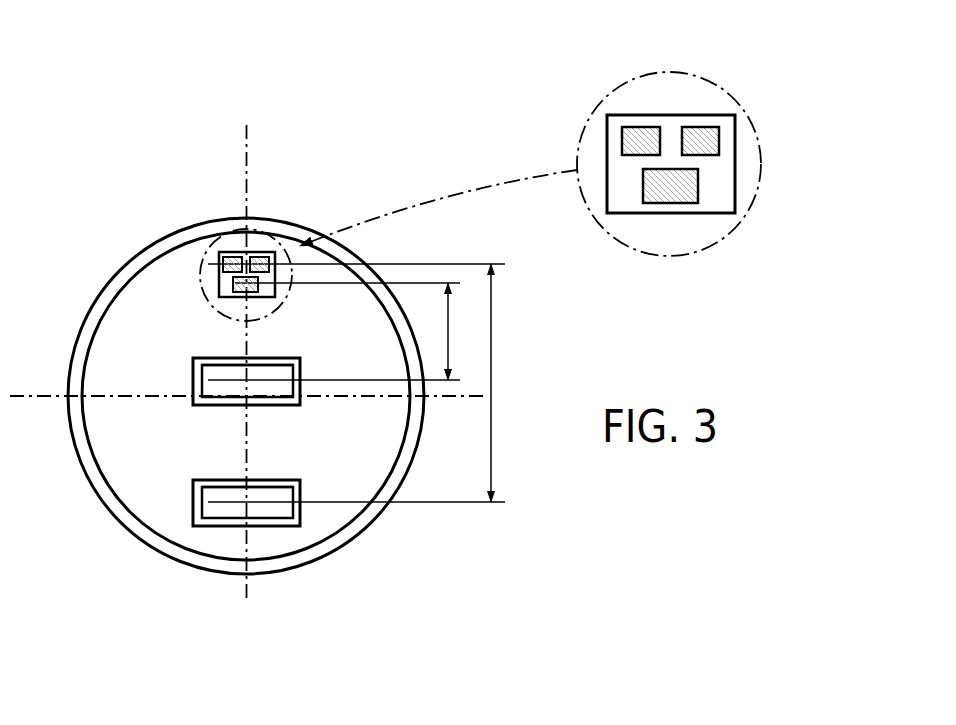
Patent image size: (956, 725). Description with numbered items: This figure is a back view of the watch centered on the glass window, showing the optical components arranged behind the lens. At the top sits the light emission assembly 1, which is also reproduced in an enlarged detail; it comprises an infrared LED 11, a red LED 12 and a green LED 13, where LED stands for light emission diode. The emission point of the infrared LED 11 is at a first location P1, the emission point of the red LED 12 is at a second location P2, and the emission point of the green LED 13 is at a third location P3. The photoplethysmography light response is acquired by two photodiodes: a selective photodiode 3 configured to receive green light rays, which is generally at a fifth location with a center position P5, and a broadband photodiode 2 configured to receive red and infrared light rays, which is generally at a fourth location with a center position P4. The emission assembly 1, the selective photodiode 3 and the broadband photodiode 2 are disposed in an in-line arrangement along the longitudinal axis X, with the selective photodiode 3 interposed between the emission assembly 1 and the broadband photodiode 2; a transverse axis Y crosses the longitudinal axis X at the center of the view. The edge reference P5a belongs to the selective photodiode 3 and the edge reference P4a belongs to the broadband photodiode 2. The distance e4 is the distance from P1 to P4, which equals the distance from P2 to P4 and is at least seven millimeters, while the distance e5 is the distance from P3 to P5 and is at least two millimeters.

The light emission assembly 1 is at (230, 252).
The broadband photodiode 2 is at (190, 495).
The selective photodiode 3 is at (190, 371).
The infrared LED 11 is at (640, 140).
The red LED 12 is at (703, 140).
The green LED 13 is at (672, 187).
The first location P1 is at (229, 262).
The second location P2 is at (259, 263).
The third location P3 is at (238, 285).
The center position of the fourth location P4 is at (247, 502).
The fourth contact point edge P4a is at (246, 487).
The center position of the fifth location P5 is at (247, 380).
The fifth contact point edge P5a is at (246, 365).
The longitudinal axis X is at (247, 147).
The Y axis Y is at (30, 392).
The distance e4 is at (510, 383).
The distance e5 is at (466, 331).